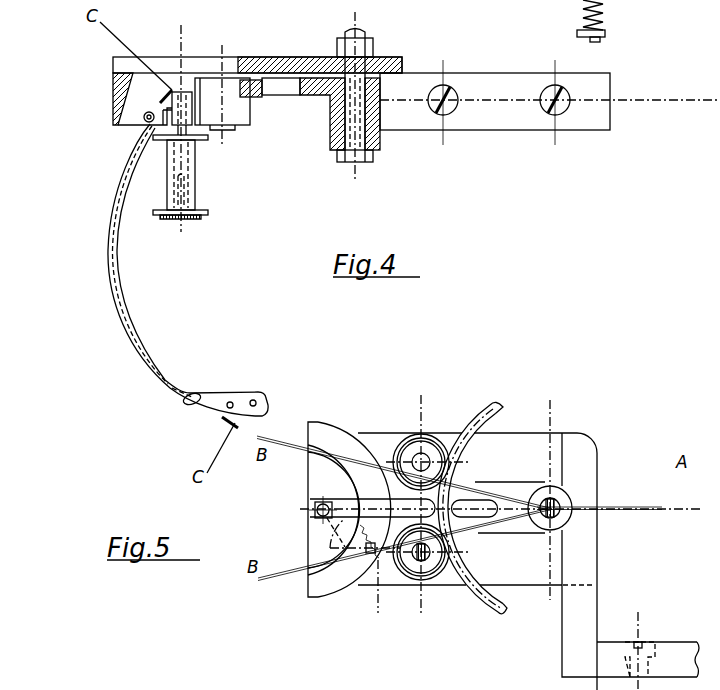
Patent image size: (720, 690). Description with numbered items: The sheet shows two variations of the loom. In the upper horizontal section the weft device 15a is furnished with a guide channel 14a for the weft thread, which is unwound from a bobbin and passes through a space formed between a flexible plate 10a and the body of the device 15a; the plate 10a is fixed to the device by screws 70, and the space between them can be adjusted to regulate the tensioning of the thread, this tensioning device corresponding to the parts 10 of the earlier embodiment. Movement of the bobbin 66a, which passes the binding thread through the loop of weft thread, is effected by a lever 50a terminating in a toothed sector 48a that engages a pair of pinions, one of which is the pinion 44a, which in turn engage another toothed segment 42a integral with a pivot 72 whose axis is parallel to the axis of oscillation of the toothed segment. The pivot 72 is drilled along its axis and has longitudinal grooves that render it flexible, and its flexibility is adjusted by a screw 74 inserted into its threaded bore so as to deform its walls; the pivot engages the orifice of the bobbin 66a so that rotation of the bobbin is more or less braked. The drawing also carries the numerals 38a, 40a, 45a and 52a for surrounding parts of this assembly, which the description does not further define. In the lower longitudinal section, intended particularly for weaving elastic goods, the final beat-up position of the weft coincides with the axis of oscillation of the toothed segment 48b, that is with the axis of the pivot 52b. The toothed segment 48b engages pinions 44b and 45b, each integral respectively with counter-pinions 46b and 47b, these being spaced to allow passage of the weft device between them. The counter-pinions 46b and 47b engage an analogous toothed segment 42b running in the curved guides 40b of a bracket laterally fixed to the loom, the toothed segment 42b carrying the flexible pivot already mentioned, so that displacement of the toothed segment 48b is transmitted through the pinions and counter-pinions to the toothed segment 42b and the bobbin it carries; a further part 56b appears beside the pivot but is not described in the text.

In FIG. 4, the tensioning parts 10 is at (578, 7).
In FIG. 4, the flexible plate 10a is at (197, 395).
In FIG. 4, the guide channel 14a is at (108, 228).
In FIG. 4, the weft device 15a is at (155, 373).
In FIG. 4, the top mounting plate 38a is at (322, 55).
In FIG. 4, the bracket 40a is at (167, 110).
In FIG. 4, the toothed segment 42a is at (184, 92).
In FIG. 4, the pinion 44a is at (245, 74).
In FIG. 4, the guide block 45a is at (229, 96).
In FIG. 4, the toothed sector 48a is at (252, 97).
In FIG. 4, the lever 50a is at (380, 143).
In FIG. 4, the nut 52a is at (366, 160).
In FIG. 4, the bobbin 66a is at (167, 175).
In FIG. 4, the screws 70 is at (253, 400).
In FIG. 4, the pivot 72 is at (186, 155).
In FIG. 4, the screw 74 is at (191, 192).
In FIG. 5, the curved guides 40b is at (328, 423).
In FIG. 5, the toothed segment 42b is at (365, 593).
In FIG. 5, the pinion 44b is at (434, 590).
In FIG. 5, the counter-pinion 46b is at (432, 562).
In FIG. 5, the pinion 45b is at (461, 416).
In FIG. 5, the counter-pinion 47b is at (428, 448).
In FIG. 5, the toothed segment 48b is at (502, 407).
In FIG. 5, the pivot 52b is at (552, 506).
In FIG. 5, the housing block 56b is at (535, 444).